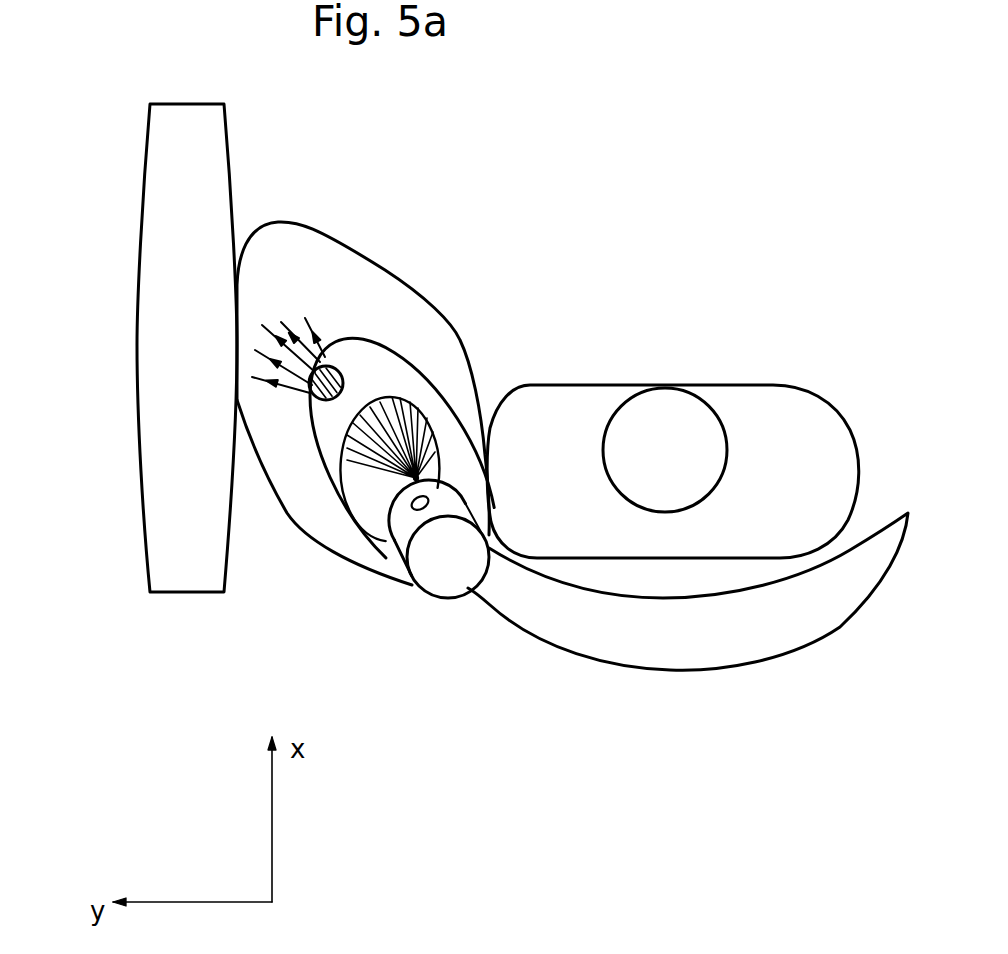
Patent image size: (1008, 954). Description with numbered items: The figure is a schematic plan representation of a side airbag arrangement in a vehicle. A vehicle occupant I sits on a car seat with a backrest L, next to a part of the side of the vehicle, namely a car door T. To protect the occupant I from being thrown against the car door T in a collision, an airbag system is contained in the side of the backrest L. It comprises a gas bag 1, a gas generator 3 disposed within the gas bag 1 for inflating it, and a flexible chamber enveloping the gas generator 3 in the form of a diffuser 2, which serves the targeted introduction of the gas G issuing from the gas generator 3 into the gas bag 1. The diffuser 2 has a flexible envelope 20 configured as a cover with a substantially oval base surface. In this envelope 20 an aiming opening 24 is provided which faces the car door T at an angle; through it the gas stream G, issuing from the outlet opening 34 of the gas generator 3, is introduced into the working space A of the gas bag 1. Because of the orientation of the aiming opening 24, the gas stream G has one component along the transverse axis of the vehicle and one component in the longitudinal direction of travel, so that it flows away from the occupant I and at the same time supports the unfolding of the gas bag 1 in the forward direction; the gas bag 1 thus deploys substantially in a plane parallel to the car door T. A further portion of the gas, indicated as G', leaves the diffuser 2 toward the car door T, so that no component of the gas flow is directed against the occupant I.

The gas bag 1 is at (396, 278).
The diffuser 2 is at (450, 473).
The gas generator 3 is at (440, 575).
The flexible envelope 20 is at (393, 377).
The aiming opening 24 is at (320, 403).
The outlet opening 34 is at (413, 513).
The car door T is at (159, 387).
The vehicle occupant I is at (792, 422).
The backrest L is at (645, 652).
The gas stream G is at (468, 437).
The outgoing light beam G' is at (307, 277).
The working space A is at (342, 290).